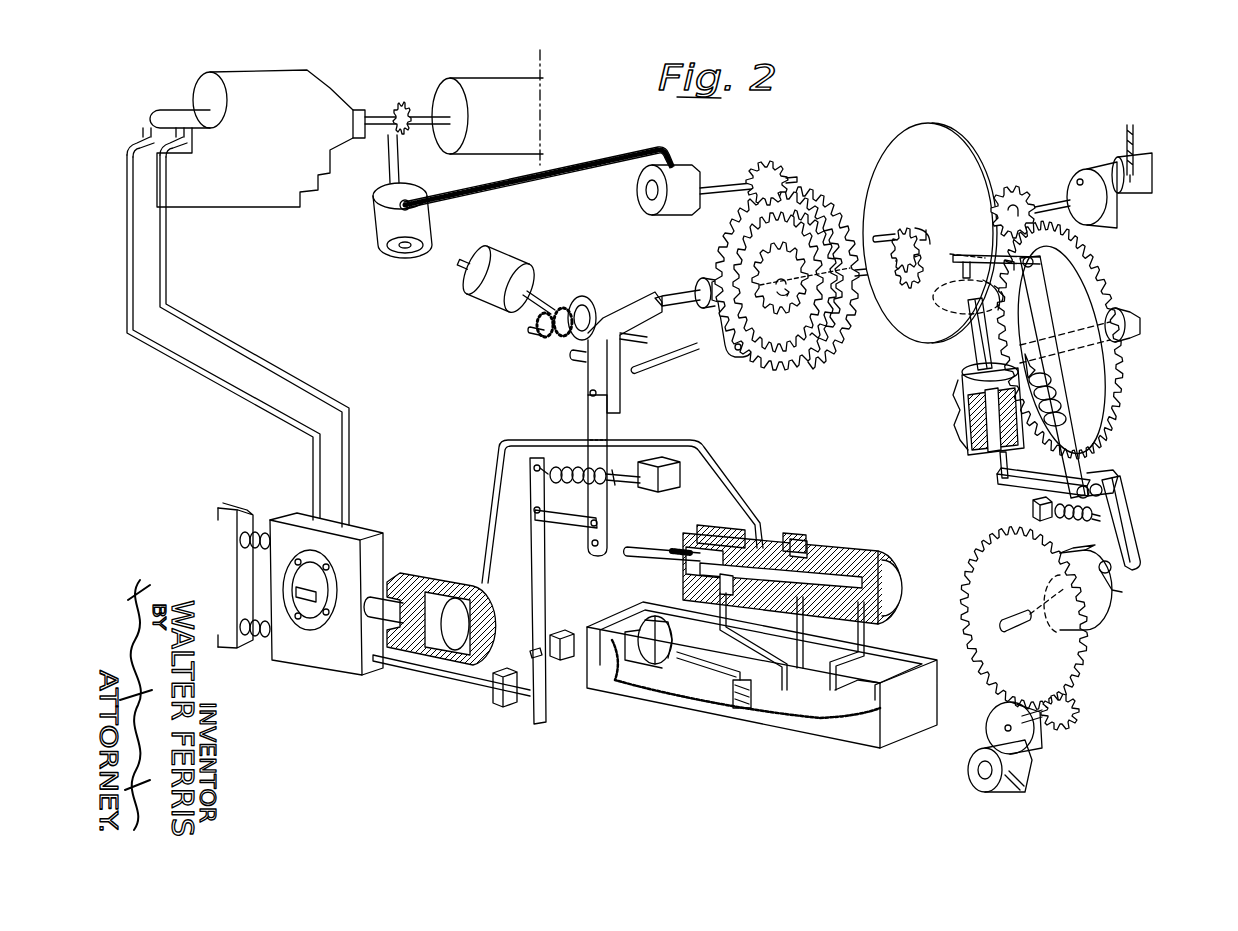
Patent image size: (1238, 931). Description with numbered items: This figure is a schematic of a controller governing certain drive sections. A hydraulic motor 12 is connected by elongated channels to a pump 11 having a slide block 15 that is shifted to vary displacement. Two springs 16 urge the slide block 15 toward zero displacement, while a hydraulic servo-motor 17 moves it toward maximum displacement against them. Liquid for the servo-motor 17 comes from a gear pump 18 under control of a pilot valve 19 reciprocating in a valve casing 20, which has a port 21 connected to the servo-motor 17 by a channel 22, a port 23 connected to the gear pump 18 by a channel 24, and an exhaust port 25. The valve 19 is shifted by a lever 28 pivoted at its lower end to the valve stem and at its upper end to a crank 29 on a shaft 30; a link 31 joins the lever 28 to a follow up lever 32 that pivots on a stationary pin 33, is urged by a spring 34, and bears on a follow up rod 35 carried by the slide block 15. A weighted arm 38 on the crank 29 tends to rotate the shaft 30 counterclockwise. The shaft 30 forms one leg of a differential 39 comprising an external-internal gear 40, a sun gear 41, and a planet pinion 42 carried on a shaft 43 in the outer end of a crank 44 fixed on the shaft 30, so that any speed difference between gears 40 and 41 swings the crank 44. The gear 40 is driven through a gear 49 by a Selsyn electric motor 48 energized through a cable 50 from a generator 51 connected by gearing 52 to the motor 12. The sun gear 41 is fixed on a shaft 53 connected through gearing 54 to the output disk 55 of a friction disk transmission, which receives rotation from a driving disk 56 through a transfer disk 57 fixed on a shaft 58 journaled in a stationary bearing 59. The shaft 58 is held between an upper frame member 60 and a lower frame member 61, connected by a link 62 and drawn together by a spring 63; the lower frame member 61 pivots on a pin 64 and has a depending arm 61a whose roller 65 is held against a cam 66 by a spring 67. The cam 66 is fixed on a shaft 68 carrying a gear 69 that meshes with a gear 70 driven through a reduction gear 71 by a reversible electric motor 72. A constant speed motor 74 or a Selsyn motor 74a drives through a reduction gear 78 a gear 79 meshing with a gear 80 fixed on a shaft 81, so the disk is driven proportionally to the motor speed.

The pump 11 is at (196, 508).
The hydraulic motor 12 is at (254, 138).
The slide block 15 is at (326, 611).
The springs 16 is at (248, 548).
The hydraulic servo-motor 17 is at (443, 575).
The gear pump 18 is at (655, 668).
The pilot valve 19 is at (776, 564).
The valve casing 20 is at (893, 558).
The port 21 is at (772, 546).
The channel 22 is at (724, 474).
The port 23 is at (804, 546).
The channel 24 is at (729, 657).
The exhaust port 25 is at (740, 530).
The lever 28 is at (607, 421).
The crank 29 is at (587, 377).
The shaft 30 is at (679, 295).
The link 31 is at (568, 518).
The follow up lever 32 is at (529, 555).
The stationary pin 33 is at (534, 668).
The spring 34 is at (582, 484).
The follow up rod 35 is at (453, 680).
The weighted arm 38 is at (535, 283).
The differential 39 is at (850, 379).
The external-internal gear 40 is at (720, 246).
The sun gear 41 is at (801, 278).
The planet pinion 42 is at (782, 356).
The shaft 43 is at (760, 362).
The crank 44 is at (716, 326).
The electric motor 48 is at (640, 208).
The gear 49 is at (770, 162).
The cable 50 is at (516, 172).
The generator 51 is at (380, 220).
The gearing 52 is at (454, 112).
The shaft 53 is at (852, 300).
The gearing 54 is at (905, 228).
The output disk 55 is at (930, 233).
The driving disk 56 is at (1045, 377).
The transfer disk 57 is at (989, 334).
The shaft 58 is at (1000, 455).
The stationary bearing 59 is at (968, 413).
The upper frame member 60 is at (979, 238).
The lower frame member 61 is at (1012, 485).
The depending arm 61a is at (1124, 526).
The link 62 is at (1082, 468).
The spring 63 is at (1040, 420).
The pin 64 is at (1122, 477).
The pin or roller 65 is at (1126, 578).
The cam 66 is at (1105, 606).
The spring 67 is at (1070, 520).
The shaft 68 is at (1016, 602).
The gear 69 is at (1024, 618).
The gear 70 is at (1078, 715).
The reduction gear 71 is at (1040, 748).
The reversible electric motor 72 is at (996, 745).
The constant speed electric motor 74 is at (1180, 190).
The Selsyn motor 74a is at (1169, 180).
The reduction gear 78 is at (1112, 212).
The gear 79 is at (1012, 190).
The gear 80 is at (1090, 278).
The shaft 81 is at (1138, 322).